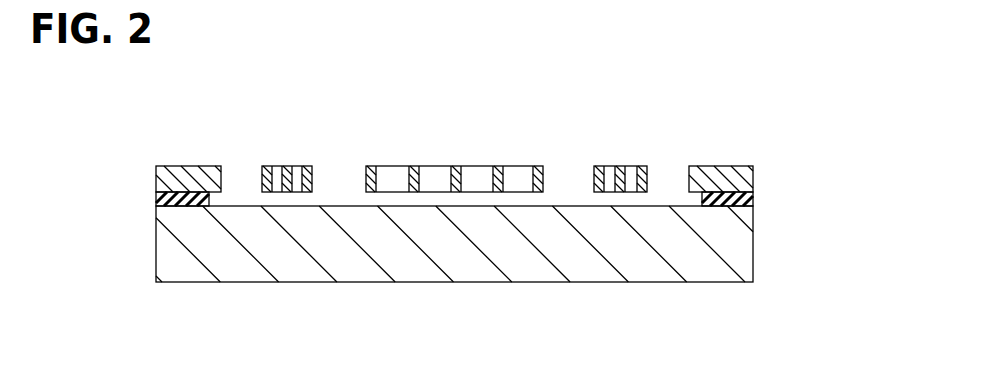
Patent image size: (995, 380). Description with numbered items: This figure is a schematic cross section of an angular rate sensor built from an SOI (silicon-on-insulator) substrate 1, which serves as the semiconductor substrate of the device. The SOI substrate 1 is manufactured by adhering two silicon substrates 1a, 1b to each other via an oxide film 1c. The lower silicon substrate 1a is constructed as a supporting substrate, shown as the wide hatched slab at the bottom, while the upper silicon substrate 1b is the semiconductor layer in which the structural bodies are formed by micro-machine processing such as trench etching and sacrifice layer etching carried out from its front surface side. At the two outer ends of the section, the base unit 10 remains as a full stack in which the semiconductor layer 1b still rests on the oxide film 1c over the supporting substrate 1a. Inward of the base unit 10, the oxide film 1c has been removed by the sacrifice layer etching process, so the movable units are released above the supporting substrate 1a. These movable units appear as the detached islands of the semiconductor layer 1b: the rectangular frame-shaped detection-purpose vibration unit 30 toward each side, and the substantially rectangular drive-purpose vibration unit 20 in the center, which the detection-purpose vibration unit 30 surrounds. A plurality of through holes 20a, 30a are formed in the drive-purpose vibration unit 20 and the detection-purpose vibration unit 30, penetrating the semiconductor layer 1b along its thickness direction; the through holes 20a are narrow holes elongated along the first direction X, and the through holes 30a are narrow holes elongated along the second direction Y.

The SOI substrate 1 is at (496, 191).
The silicon substrate 1a is at (745, 232).
The silicon substrate 1b is at (482, 146).
The oxide film 1c is at (751, 199).
The base unit 10 is at (175, 173).
The drive-purpose vibration unit 20 is at (455, 177).
The through hole 20a is at (392, 177).
The detection-purpose vibration unit 30 is at (287, 175).
The through hole 30a is at (278, 175).